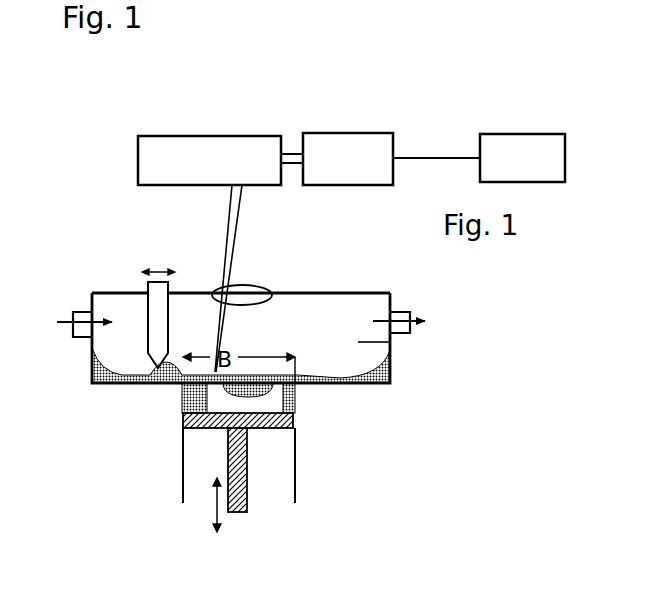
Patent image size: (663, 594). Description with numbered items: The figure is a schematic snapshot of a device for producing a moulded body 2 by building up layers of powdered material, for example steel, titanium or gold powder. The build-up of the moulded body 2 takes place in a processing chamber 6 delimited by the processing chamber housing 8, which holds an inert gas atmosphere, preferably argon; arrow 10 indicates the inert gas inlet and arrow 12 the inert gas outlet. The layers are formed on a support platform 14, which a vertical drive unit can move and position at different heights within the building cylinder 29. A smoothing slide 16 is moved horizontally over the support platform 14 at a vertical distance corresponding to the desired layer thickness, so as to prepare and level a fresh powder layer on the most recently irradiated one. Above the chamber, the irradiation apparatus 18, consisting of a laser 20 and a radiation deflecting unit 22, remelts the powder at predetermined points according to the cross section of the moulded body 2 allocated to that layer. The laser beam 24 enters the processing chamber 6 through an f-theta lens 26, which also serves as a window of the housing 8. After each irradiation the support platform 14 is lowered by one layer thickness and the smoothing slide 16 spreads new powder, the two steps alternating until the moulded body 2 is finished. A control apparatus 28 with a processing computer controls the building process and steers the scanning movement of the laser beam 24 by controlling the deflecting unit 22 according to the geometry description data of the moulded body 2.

The moulded body 2 is at (267, 402).
The processing chamber 6 is at (390, 345).
The processing chamber housing 8 is at (328, 293).
The inert gas inlet 10 is at (110, 317).
The inert gas outlet 12 is at (412, 313).
The support platform 14 is at (270, 433).
The smoothing slide 16 is at (173, 295).
The irradiation apparatus 18 is at (308, 110).
The laser 20 is at (347, 172).
The radiation deflecting unit 22 is at (152, 147).
The laser beam 24 is at (232, 206).
The f-theta lens 26 is at (242, 290).
The control apparatus 28 is at (519, 126).
The building cylinder 29 is at (194, 430).